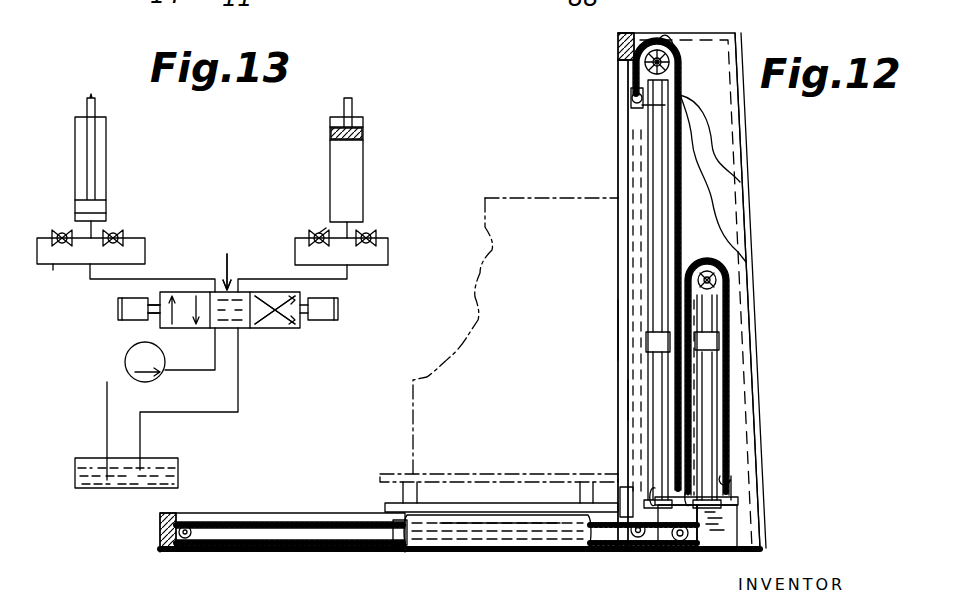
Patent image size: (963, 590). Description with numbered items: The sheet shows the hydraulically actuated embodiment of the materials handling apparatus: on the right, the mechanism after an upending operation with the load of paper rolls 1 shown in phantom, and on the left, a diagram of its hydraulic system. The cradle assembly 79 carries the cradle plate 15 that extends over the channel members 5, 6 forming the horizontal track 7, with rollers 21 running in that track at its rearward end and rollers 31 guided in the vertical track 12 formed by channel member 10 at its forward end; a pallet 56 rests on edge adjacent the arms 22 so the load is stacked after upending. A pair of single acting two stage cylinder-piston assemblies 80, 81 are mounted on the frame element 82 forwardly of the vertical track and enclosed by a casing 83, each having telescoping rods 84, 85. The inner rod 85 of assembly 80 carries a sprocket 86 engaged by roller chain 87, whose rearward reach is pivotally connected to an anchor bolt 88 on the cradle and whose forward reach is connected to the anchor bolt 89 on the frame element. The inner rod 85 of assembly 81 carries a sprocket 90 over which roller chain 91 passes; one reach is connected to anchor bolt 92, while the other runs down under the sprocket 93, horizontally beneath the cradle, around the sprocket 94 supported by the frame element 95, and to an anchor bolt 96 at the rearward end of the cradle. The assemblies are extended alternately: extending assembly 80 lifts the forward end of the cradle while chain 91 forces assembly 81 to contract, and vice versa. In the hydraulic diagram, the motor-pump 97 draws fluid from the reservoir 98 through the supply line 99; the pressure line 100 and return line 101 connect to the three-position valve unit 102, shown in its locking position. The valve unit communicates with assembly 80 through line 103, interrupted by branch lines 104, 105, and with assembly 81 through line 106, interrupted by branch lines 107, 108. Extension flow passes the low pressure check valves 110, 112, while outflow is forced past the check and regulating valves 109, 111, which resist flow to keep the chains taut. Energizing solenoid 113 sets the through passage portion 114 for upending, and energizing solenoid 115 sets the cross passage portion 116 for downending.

In FIG. 12, the rolls of paper 1 is at (522, 198).
In FIG. 12, the channel member 5 is at (362, 518).
In FIG. 12, the channel member 6 is at (452, 540).
In FIG. 12, the horizontal track 7 is at (511, 560).
In FIG. 12, the channel member 10 is at (634, 48).
In FIG. 12, the vertical track 12 is at (610, 74).
In FIG. 12, the cradle plate 15 is at (628, 400).
In FIG. 12, the rollers 21 is at (652, 550).
In FIG. 12, the arms 22 is at (395, 538).
In FIG. 12, the rollers 31 is at (642, 105).
In FIG. 12, the pallet 56 is at (430, 460).
In FIG. 12, the cradle assembly 79 is at (608, 326).
In FIG. 13, the cylinder-piston assembly 80 is at (106, 152).
In FIG. 12, the cylinder-piston assembly 80 is at (655, 370).
In FIG. 13, the cylinder-piston assembly 81 is at (364, 165).
In FIG. 12, the cylinder-piston assembly 81 is at (708, 366).
In FIG. 12, the frame element 82 is at (725, 538).
In FIG. 12, the casing 83 is at (745, 222).
In FIG. 12, the telescoping rod 84 is at (660, 250).
In FIG. 12, the inner rod 85 is at (655, 152).
In FIG. 12, the sprocket 86 is at (660, 52).
In FIG. 12, the roller chain 87 is at (672, 148).
In FIG. 12, the anchor bolt 88 is at (632, 100).
In FIG. 12, the anchor bolt 89 is at (640, 475).
In FIG. 12, the sprocket 90 is at (718, 280).
In FIG. 12, the roller chain 91 is at (735, 412).
In FIG. 12, the anchor bolt 92 is at (730, 481).
In FIG. 12, the sprocket 93 is at (690, 555).
In FIG. 12, the sprocket 94 is at (198, 540).
In FIG. 12, the frame element 95 is at (178, 517).
In FIG. 12, the anchor bolt 96 is at (628, 552).
In FIG. 13, the motor-pump 97 is at (124, 360).
In FIG. 13, the reservoir 98 is at (91, 485).
In FIG. 13, the supply line 99 is at (106, 420).
In FIG. 13, the pressure line 100 is at (215, 352).
In FIG. 13, the return line 101 is at (240, 393).
In FIG. 13, the three-position valve unit 102 is at (227, 254).
In FIG. 13, the line 103 is at (221, 270).
In FIG. 12, the line 103 is at (648, 487).
In FIG. 13, the branch line 104 is at (53, 266).
In FIG. 13, the branch line 105 is at (140, 240).
In FIG. 13, the line 106 is at (282, 279).
In FIG. 12, the line 106 is at (715, 512).
In FIG. 13, the branch line 107 is at (380, 270).
In FIG. 13, the branch line 108 is at (310, 233).
In FIG. 13, the one-way check and regulating valve 109 is at (113, 232).
In FIG. 13, the check valve 110 is at (63, 232).
In FIG. 13, the one-way check and regulating valve 111 is at (321, 232).
In FIG. 13, the check valve 112 is at (377, 233).
In FIG. 13, the solenoid 113 is at (116, 312).
In FIG. 13, the through passage portion 114 is at (160, 322).
In FIG. 13, the solenoid 115 is at (338, 310).
In FIG. 13, the cross passage portion 116 is at (272, 328).